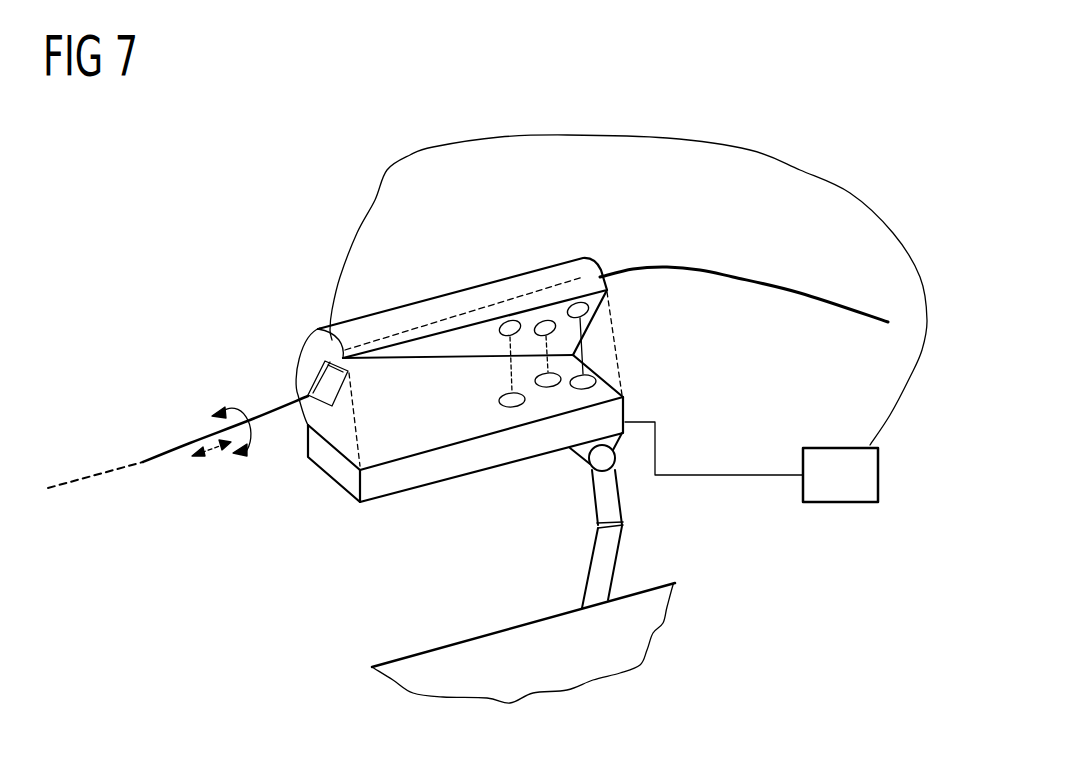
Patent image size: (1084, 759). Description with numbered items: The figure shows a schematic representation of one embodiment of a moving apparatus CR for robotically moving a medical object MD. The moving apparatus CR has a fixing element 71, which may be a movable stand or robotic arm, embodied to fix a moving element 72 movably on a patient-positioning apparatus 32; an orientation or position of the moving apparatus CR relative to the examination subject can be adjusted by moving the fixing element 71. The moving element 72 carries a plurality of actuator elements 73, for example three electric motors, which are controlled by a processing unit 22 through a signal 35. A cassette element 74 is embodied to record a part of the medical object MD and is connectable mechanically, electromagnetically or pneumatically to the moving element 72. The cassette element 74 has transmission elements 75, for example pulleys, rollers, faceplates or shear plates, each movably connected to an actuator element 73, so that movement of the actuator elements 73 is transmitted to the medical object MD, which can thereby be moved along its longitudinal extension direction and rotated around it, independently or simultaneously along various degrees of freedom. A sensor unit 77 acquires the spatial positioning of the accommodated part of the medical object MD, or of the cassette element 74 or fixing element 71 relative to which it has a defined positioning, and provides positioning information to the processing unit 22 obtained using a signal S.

The signal S is at (740, 150).
The medical object MD is at (835, 305).
The moving apparatus CR is at (283, 358).
The sensor unit 77 is at (328, 365).
The moving element 72 is at (625, 405).
The cassette element 74 is at (472, 287).
The transmission element 75 is at (510, 321).
The actuator element 73 is at (583, 389).
The fixing element 71 is at (623, 507).
The patient-positioning apparatus 32 is at (662, 623).
The signal 35 is at (768, 475).
The processing unit 22 is at (878, 472).